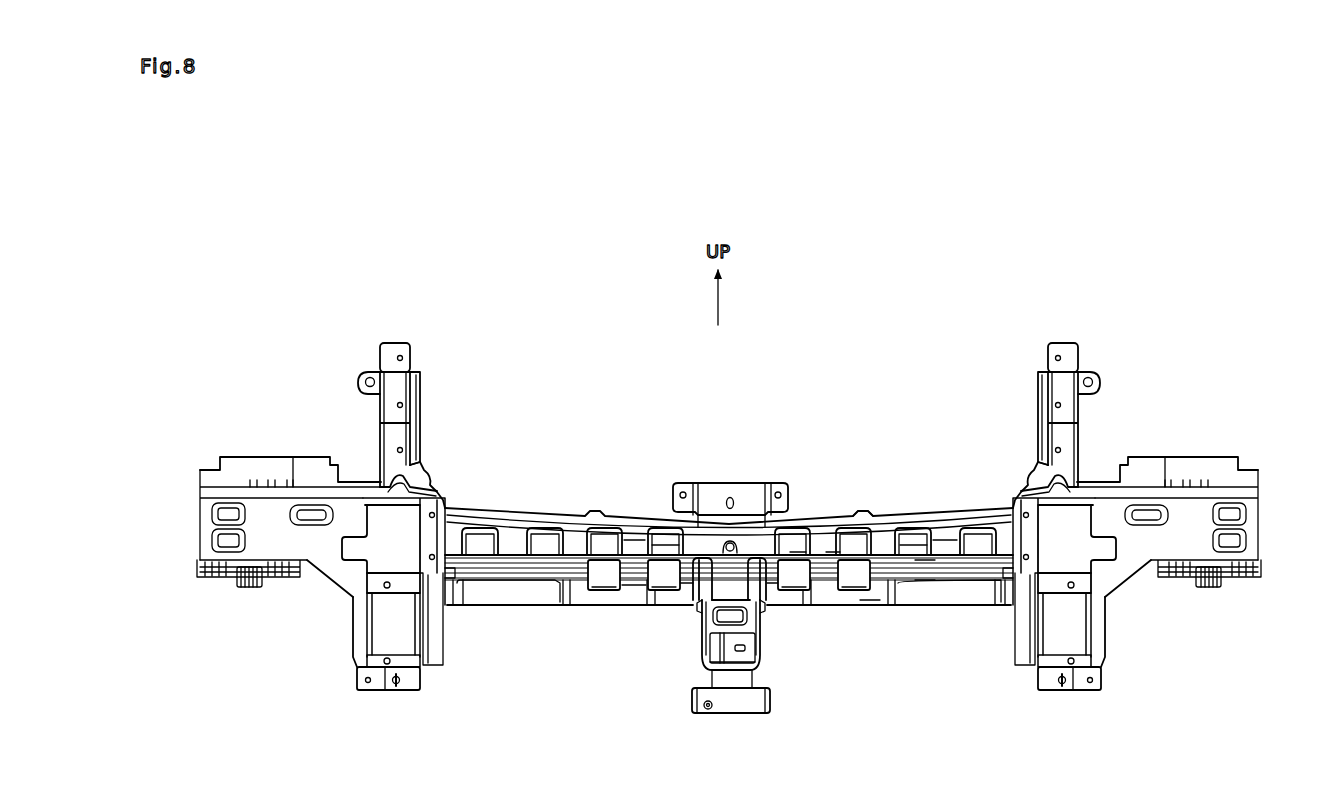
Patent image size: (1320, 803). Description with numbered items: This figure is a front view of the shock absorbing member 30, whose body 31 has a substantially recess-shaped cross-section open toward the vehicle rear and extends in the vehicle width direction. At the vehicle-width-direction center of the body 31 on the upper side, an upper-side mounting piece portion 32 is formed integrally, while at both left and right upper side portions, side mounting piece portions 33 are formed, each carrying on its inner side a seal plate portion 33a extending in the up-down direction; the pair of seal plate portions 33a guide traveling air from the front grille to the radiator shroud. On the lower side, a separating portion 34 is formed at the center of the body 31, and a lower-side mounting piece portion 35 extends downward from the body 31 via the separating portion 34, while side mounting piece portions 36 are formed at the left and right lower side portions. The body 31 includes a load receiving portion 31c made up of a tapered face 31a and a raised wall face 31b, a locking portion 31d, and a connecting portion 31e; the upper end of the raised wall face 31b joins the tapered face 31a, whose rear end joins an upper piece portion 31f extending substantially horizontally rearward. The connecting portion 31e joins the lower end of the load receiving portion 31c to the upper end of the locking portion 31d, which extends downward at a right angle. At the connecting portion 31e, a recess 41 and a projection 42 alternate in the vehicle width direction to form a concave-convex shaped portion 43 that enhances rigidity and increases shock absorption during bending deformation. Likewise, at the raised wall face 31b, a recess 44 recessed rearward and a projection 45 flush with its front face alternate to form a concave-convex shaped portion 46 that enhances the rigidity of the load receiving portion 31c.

The shock absorbing member 30 is at (545, 410).
The body 31 is at (518, 508).
The tapered face 31a is at (798, 545).
The raised wall face 31b is at (832, 545).
The load receiving portion 31c is at (793, 412).
The locking portion 31d is at (868, 606).
The connecting portion 31e is at (923, 568).
The upper piece portion 31f is at (851, 514).
The upper-side mounting piece portion 32 is at (729, 481).
The side mounting piece portion 33 is at (380, 420).
The seal plate portion 33a is at (421, 398).
The separating portion 34 is at (700, 607).
The lower-side mounting piece portion 35 is at (775, 703).
The side mounting piece portion 36 is at (352, 650).
The recess 41 is at (632, 578).
The projection 42 is at (601, 578).
The concave-convex shaped portion 43 is at (545, 661).
The recess 44 is at (661, 548).
The projection 45 is at (631, 543).
The concave-convex shaped portion 46 is at (590, 457).